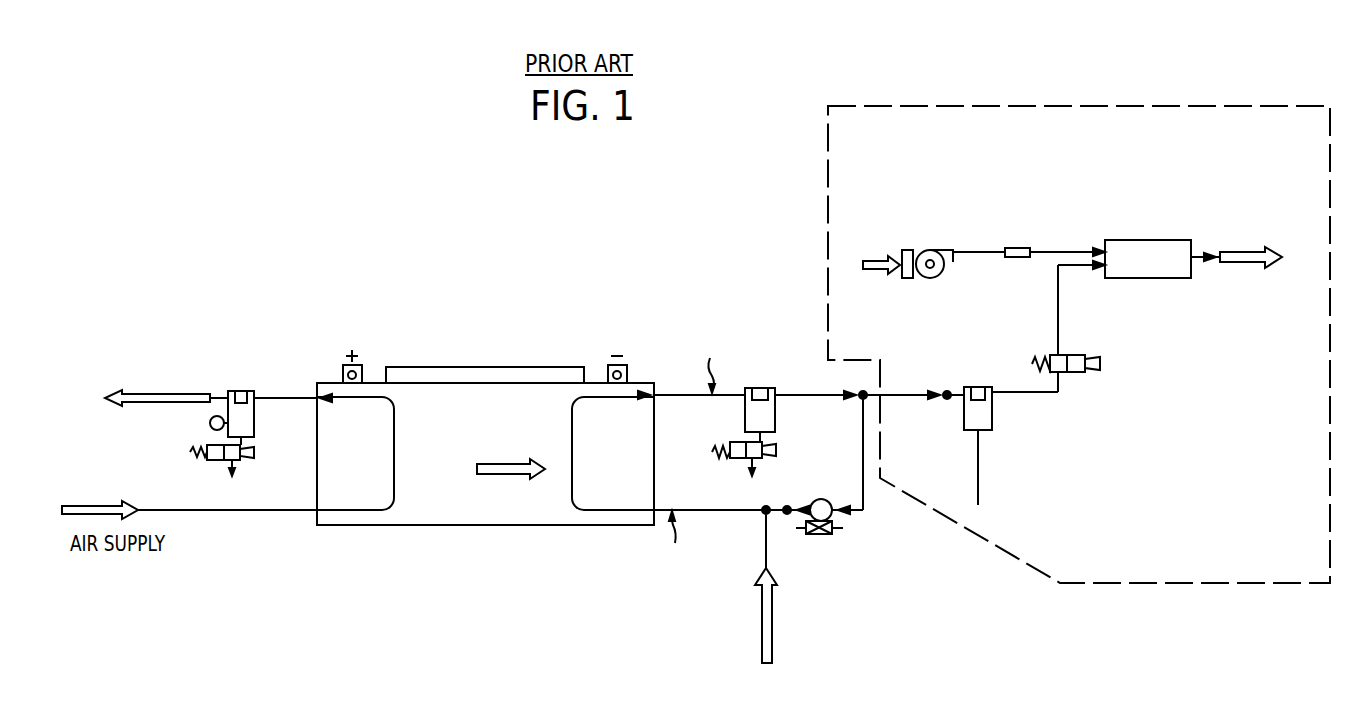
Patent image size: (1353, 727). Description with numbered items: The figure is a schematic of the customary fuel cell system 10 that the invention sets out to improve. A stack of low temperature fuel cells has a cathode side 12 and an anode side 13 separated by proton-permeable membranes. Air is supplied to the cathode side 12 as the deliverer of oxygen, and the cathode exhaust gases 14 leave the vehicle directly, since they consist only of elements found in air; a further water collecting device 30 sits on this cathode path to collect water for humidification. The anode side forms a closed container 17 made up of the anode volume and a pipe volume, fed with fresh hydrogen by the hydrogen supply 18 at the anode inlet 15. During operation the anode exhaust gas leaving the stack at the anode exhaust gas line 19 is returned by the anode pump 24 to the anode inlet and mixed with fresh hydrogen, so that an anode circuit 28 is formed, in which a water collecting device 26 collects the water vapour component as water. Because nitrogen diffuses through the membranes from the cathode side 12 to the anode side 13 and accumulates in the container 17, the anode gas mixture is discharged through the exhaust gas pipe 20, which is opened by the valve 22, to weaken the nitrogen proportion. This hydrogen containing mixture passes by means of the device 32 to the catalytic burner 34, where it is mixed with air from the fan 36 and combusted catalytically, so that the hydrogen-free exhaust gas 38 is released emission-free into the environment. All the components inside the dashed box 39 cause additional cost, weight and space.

The fuel cell system 10 is at (530, 527).
The cathode side 12 is at (392, 444).
The anode side 13 is at (574, 444).
The cathode exhaust gases 14 is at (168, 400).
The anode inlet line 15 is at (656, 506).
The closed container 17 is at (866, 488).
The hydrogen supply 18 is at (773, 622).
The anode exhaust line 19 is at (658, 398).
The exhaust gas pipe 20 is at (905, 397).
The valve 22 is at (1082, 374).
The anode pump 24 is at (830, 536).
The water collecting device 26 is at (777, 422).
The anode circuit 28 is at (680, 392).
The further water collecting device 30 is at (256, 428).
The device 32 is at (993, 420).
The catalytic burner 34 is at (1150, 263).
The fan 36 is at (934, 256).
The hydrogen-free exhaust gas 38 is at (1250, 262).
The box 39 is at (1188, 585).